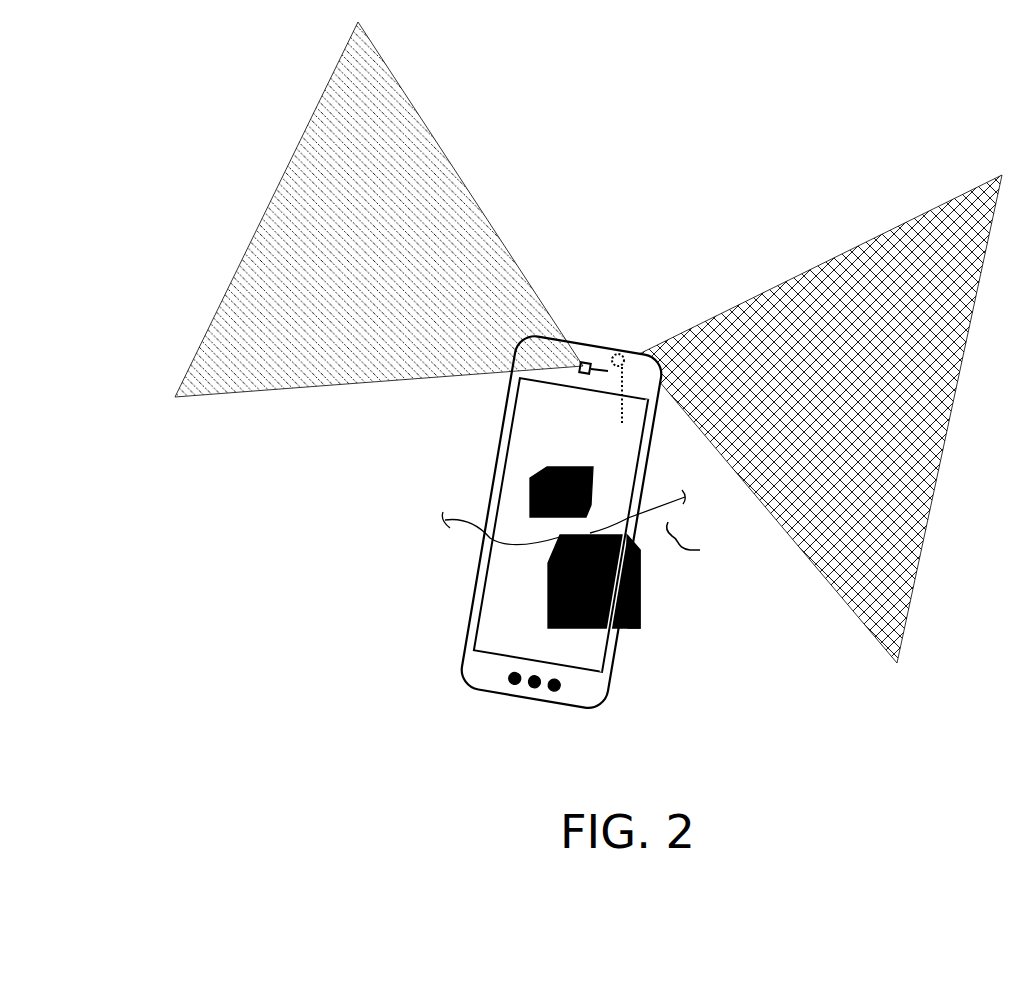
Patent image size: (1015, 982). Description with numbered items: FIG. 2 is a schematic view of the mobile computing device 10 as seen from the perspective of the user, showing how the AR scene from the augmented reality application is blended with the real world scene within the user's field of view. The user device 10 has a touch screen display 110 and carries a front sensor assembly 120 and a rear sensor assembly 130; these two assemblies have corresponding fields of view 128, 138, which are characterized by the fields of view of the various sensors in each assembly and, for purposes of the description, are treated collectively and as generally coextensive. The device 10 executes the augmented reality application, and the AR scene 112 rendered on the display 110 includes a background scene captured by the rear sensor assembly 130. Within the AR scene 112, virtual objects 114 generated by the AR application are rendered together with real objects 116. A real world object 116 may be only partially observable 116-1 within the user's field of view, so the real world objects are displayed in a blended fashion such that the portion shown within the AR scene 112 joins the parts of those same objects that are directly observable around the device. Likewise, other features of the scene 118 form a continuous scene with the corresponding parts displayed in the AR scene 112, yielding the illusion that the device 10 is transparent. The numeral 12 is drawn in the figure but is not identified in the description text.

The mobile computing device 10 is at (399, 548).
The user environment 12 is at (699, 543).
The touch screen display 110 is at (477, 637).
The AR scene 112 is at (528, 564).
The virtual objects 114 is at (568, 518).
The real objects 116 is at (603, 628).
The partially observable portion of real world object 116-1 is at (638, 628).
The other features of the scene 118 is at (472, 526).
The front sensor assembly 120 is at (587, 373).
The field of view of front sensor assembly 128 is at (502, 201).
The rear sensor assembly 130 is at (622, 423).
The field of view of rear sensor assembly 138 is at (764, 520).